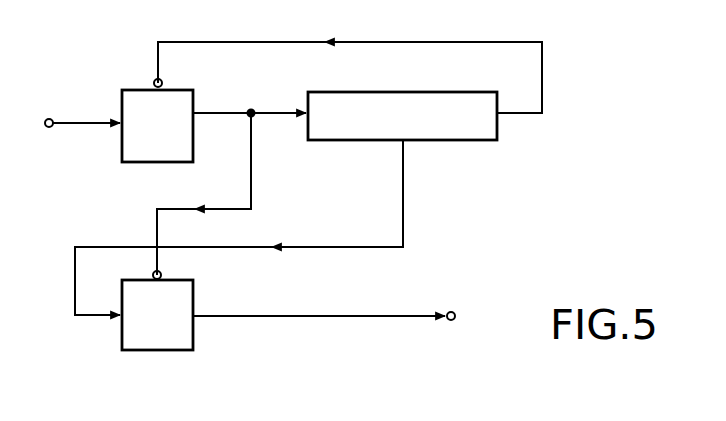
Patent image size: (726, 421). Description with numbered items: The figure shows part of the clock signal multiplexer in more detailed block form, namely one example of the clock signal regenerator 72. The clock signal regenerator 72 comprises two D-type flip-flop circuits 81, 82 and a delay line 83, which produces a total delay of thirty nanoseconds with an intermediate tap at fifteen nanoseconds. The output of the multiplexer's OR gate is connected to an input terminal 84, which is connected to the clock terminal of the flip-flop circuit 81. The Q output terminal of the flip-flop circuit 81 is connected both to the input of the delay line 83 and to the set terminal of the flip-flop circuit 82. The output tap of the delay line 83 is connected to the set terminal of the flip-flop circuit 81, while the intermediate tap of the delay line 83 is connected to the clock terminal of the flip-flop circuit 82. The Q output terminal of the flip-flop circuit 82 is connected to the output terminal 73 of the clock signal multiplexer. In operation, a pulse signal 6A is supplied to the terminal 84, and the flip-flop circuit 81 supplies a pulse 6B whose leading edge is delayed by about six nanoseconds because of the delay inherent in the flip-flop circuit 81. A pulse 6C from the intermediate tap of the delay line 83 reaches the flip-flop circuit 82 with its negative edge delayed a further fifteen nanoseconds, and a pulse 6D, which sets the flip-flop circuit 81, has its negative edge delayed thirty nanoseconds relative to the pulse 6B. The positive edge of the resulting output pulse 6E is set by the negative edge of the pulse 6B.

The clock signal regenerator 72 is at (337, 197).
The output terminal 73 is at (462, 293).
The flip-flop circuit 81 is at (185, 90).
The flip-flop circuit 82 is at (168, 351).
The delay line 83 is at (446, 141).
The input terminal 84 is at (49, 119).
The pulse signal 6A is at (71, 143).
The pulse 6B is at (216, 99).
The pulse 6C is at (92, 333).
The pulse 6D is at (518, 130).
The output pulse 6E is at (422, 337).